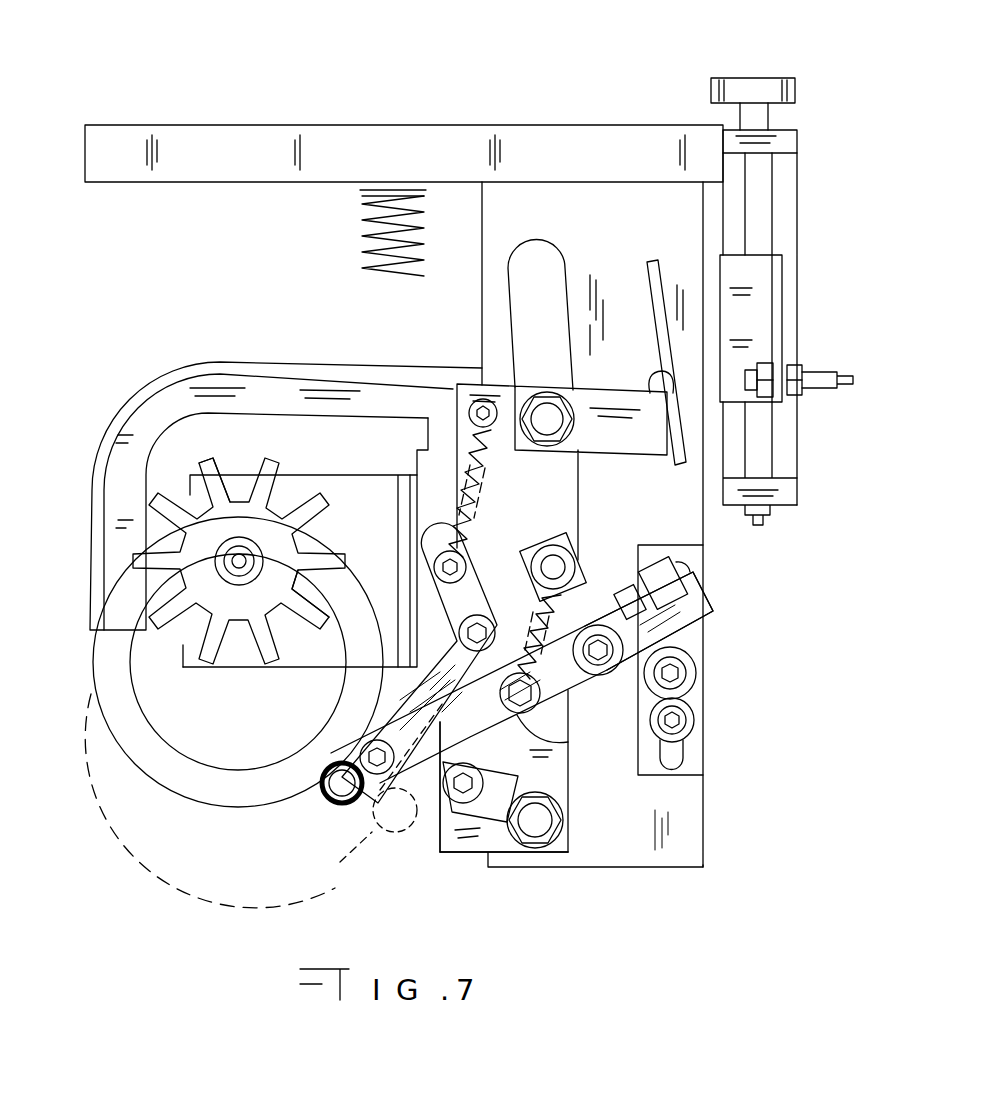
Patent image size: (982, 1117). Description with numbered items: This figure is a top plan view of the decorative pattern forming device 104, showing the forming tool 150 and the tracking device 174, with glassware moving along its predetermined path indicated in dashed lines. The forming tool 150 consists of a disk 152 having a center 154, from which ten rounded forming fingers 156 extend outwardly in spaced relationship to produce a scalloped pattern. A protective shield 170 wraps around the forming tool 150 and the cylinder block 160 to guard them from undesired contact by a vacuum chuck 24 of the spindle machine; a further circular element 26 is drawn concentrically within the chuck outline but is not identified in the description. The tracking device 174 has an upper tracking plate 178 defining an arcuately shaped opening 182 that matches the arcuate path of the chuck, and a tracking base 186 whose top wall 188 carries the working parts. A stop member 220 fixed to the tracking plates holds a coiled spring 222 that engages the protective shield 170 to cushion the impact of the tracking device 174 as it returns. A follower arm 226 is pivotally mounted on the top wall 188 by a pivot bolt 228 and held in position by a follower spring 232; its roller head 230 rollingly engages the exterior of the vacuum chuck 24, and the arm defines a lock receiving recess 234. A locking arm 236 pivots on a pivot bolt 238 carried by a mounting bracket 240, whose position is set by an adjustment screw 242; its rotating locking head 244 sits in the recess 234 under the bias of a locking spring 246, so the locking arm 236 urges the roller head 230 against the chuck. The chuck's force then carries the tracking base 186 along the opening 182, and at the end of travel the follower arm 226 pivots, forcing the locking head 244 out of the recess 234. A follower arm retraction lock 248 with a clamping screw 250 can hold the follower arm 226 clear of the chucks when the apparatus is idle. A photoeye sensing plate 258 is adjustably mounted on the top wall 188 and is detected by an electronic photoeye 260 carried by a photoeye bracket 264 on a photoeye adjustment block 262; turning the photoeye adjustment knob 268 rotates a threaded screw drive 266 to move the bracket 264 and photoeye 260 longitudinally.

The vacuum chuck 24 is at (90, 676).
The roll core 26 is at (131, 693).
The decorative pattern forming device 104 is at (652, 884).
The forming tool 150 is at (166, 620).
The disk 152 is at (210, 514).
The center 154 is at (300, 542).
The forming fingers 156 is at (226, 456).
The cylinder block 160 is at (240, 650).
The protective shield 170 is at (183, 360).
The tracking device 174 is at (698, 874).
The upper tracking plate 178 is at (676, 823).
The arcuately shaped openings 182 is at (548, 254).
The tracking base 186 is at (503, 862).
The top wall 188 is at (550, 784).
The stop member 220 is at (200, 143).
The coiled spring 222 is at (356, 255).
The follower arm 226 is at (448, 732).
The pivot bolt 228 is at (466, 585).
The roller head 230 is at (325, 804).
The follower spring 232 is at (488, 468).
The lock receiving recess 234 is at (500, 650).
The locking arm 236 is at (557, 688).
The pivot bolt 238 is at (672, 636).
The mounting bracket 240 is at (582, 583).
The adjustment screw 242 is at (688, 566).
The rotating locking head 244 is at (548, 748).
The locking spring 246 is at (580, 580).
The follower arm retraction lock 248 is at (522, 836).
The clamping screw 250 is at (480, 857).
The photoeye sensing plate 258 is at (652, 262).
The electronic photoeye 260 is at (770, 364).
The photoeye adjustment block 262 is at (788, 144).
The photoeye bracket 264 is at (760, 278).
The threaded screw drive 266 is at (760, 180).
The photoeye adjustment knob 268 is at (752, 76).